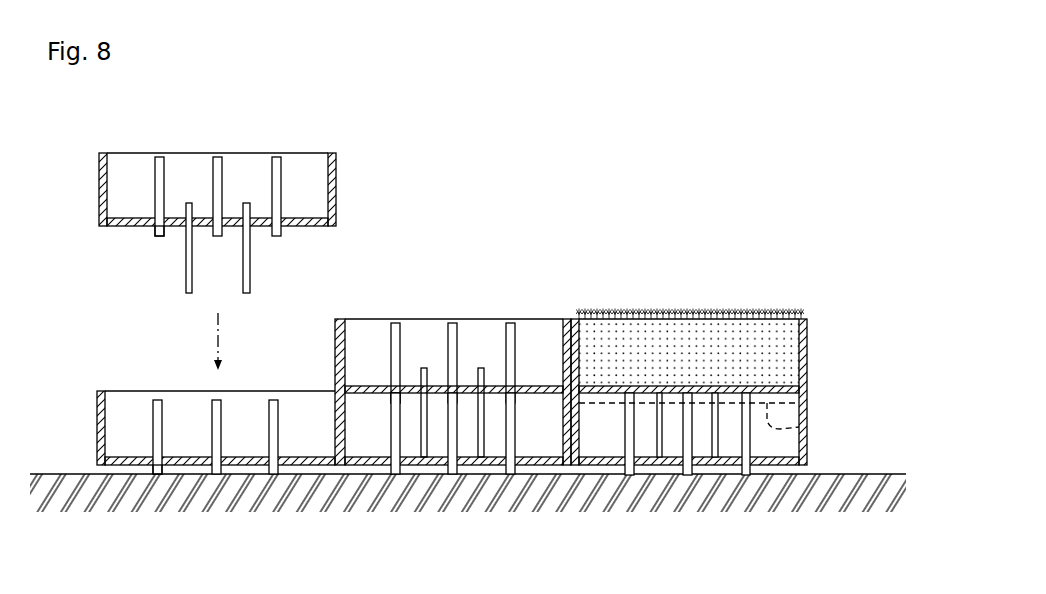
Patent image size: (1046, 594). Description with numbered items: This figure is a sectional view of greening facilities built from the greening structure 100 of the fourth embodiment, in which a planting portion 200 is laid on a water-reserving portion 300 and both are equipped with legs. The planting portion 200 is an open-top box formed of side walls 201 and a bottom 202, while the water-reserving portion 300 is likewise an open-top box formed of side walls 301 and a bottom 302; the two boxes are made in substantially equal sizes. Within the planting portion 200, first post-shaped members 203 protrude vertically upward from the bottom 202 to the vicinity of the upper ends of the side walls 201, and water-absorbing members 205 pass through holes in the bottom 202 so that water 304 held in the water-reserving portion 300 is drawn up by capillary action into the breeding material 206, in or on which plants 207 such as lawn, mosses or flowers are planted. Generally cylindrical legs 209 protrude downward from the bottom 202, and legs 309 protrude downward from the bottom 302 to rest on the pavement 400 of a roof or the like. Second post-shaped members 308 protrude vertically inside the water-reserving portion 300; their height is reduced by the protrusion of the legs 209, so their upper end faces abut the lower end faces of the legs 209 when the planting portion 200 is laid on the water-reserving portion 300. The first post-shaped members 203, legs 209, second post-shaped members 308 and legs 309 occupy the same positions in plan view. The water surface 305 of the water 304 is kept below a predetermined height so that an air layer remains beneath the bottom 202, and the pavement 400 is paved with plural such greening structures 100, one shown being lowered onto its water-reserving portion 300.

The greening structure 100 is at (700, 393).
The planting portion 200 is at (220, 193).
The side walls 201 is at (100, 191).
The bottom 202 is at (303, 226).
The first post-shaped members 203 is at (158, 172).
The water-absorbing members 205 is at (249, 258).
The breeding material 206 is at (797, 352).
The plants 207 is at (708, 309).
The legs 209 is at (161, 237).
The water-reserving portion 300 is at (184, 461).
The side walls 301 is at (102, 423).
The bottom 302 is at (242, 460).
The water 304 is at (603, 445).
The water surface 305 is at (803, 423).
The second post-shaped members 308 is at (160, 443).
The legs 309 is at (158, 468).
The pavement 400 is at (73, 473).